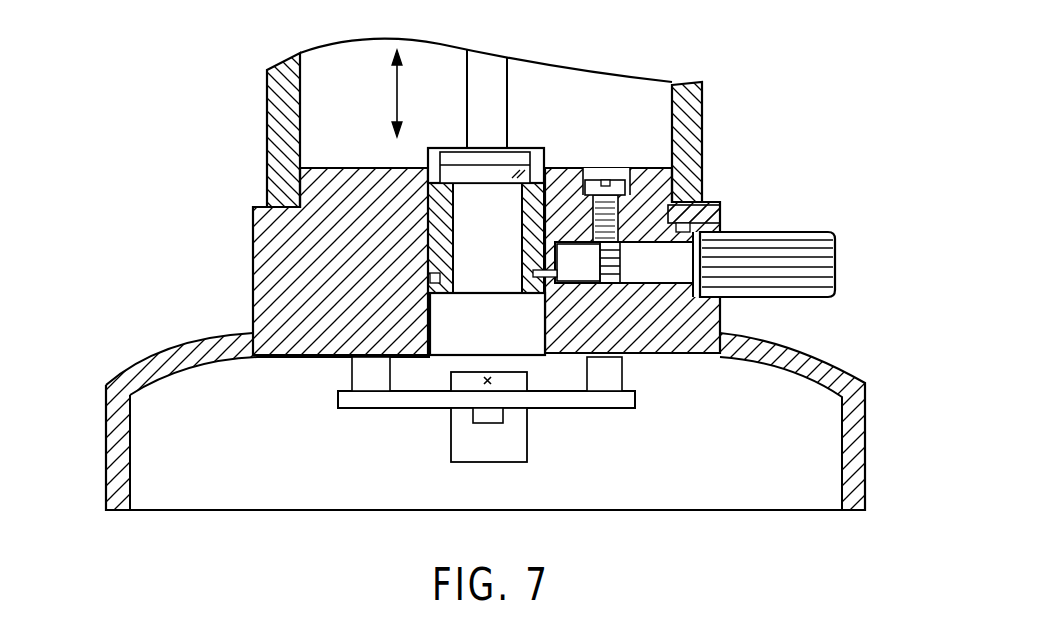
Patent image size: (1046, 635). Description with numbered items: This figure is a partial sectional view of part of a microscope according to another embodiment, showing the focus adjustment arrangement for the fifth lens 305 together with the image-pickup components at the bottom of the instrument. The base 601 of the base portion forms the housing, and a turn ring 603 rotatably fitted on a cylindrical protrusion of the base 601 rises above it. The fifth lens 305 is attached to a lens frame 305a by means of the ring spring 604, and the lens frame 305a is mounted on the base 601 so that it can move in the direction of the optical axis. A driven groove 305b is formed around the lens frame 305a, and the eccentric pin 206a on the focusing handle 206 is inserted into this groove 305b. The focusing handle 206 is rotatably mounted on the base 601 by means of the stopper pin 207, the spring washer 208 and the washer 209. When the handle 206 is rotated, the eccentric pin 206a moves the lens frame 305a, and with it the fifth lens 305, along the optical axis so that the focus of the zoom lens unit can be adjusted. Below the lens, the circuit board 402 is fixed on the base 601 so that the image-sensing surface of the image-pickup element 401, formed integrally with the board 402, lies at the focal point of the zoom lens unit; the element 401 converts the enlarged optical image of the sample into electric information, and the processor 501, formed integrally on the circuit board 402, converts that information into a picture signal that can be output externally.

The base 601 is at (108, 452).
The turn ring 603 is at (270, 123).
The ring spring 604 is at (537, 148).
The fifth lens 305 is at (452, 150).
The lens frame 305a is at (433, 243).
The driven groove 305b is at (433, 283).
The focusing handle 206 is at (815, 232).
The eccentric pin 206a is at (550, 238).
The stopper pin 207 is at (630, 204).
The spring washer 208 is at (680, 346).
The washer 209 is at (718, 213).
The image-pickup element 401 is at (510, 380).
The circuit board 402 is at (368, 408).
The processor 501 is at (525, 448).